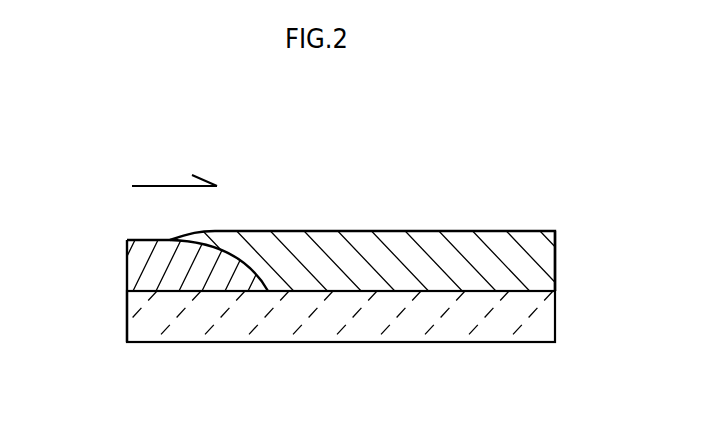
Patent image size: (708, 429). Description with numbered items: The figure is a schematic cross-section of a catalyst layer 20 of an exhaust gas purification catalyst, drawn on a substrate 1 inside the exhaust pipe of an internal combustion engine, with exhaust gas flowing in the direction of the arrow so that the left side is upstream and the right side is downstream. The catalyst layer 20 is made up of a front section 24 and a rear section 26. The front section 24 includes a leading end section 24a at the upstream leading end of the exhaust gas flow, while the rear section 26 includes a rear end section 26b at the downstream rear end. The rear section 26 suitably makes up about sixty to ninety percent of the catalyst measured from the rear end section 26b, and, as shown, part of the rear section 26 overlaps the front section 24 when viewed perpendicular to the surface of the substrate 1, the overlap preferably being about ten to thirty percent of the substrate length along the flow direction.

The catalyst layer 20 is at (355, 198).
The substrate 1 is at (403, 343).
The front section 24 is at (150, 240).
The leading end section 24a is at (126, 270).
The rear section 26 is at (420, 231).
The rear end section 26b is at (556, 265).